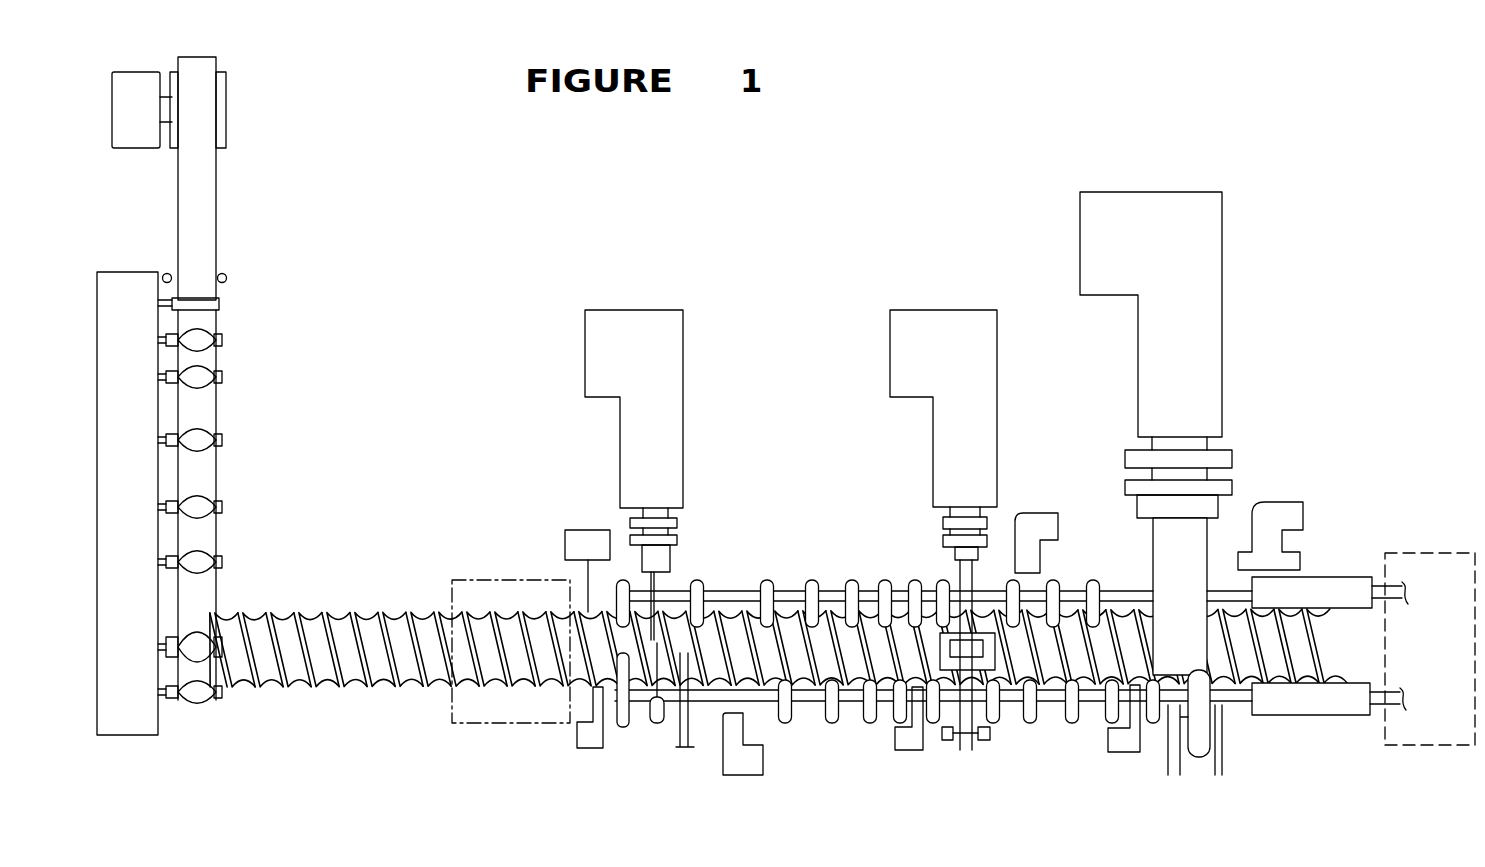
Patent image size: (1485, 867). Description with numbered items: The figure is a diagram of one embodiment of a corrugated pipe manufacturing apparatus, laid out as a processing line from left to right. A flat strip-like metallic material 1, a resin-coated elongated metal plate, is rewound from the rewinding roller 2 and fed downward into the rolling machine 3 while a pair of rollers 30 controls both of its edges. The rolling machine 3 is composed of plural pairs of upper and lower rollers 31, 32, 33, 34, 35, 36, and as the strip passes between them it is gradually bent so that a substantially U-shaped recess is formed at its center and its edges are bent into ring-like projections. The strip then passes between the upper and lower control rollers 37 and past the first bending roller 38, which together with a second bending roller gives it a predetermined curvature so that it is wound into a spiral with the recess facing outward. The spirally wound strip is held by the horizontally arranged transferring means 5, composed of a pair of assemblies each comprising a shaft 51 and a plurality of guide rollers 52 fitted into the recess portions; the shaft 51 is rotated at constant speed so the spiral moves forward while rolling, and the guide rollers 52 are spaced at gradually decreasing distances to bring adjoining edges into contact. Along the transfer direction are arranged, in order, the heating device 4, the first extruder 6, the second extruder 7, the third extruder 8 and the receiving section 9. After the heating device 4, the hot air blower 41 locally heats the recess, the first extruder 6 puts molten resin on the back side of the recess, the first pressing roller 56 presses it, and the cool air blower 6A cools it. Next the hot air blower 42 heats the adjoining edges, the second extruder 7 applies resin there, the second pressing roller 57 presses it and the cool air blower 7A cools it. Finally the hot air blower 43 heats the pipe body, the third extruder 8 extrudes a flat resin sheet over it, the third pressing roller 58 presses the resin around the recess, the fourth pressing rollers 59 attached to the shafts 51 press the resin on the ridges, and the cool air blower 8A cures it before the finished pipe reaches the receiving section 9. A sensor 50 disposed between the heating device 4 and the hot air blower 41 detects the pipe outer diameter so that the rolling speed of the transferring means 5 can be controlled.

The flat strip-like metallic material 1 is at (205, 192).
The rewinding roller 2 is at (226, 104).
The rolling machine 3 is at (228, 413).
The pair of rollers 30 is at (168, 273).
The upper and lower rollers 31 is at (222, 303).
The upper and lower rollers 32 is at (222, 340).
The upper and lower rollers 33 is at (220, 380).
The upper and lower rollers 34 is at (222, 440).
The upper and lower rollers 35 is at (222, 502).
The upper and lower rollers 36 is at (222, 561).
The control rollers 37 is at (205, 652).
The first bending roller 38 is at (190, 702).
The heating device 4 is at (505, 723).
The hot air blower 41 is at (595, 730).
The hot air blower 42 is at (912, 745).
The hot air blower 43 is at (1125, 745).
The transferring means 5 is at (880, 520).
The shaft 51 is at (783, 596).
The guide rollers 52 is at (850, 584).
The sensor 50 is at (580, 530).
The first pressing roller 56 is at (657, 703).
The second pressing roller 57 is at (997, 718).
The third pressing roller 58 is at (1202, 745).
The fourth pressing roller 59 is at (1310, 703).
The first extruder 6 is at (637, 340).
The cool air blower 6A is at (745, 762).
The second extruder 7 is at (943, 338).
The cool air blower 7A is at (1035, 528).
The third extruder 8 is at (1190, 278).
The cool air blower 8A is at (1278, 512).
The receiving section 9 is at (1425, 553).